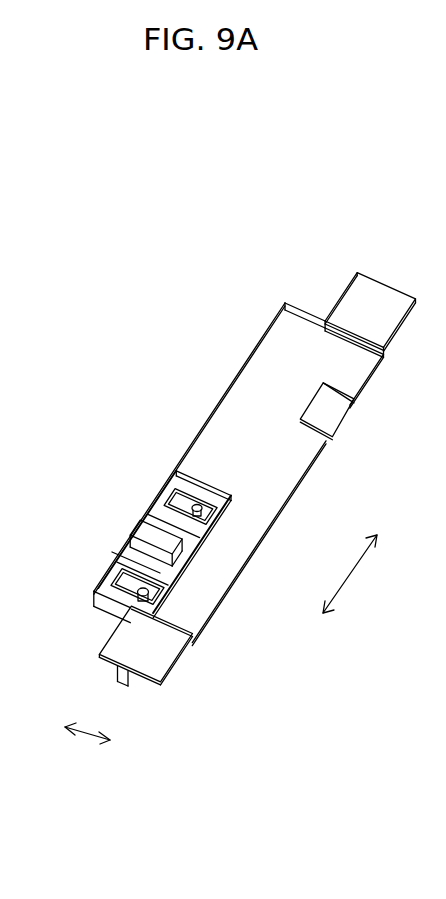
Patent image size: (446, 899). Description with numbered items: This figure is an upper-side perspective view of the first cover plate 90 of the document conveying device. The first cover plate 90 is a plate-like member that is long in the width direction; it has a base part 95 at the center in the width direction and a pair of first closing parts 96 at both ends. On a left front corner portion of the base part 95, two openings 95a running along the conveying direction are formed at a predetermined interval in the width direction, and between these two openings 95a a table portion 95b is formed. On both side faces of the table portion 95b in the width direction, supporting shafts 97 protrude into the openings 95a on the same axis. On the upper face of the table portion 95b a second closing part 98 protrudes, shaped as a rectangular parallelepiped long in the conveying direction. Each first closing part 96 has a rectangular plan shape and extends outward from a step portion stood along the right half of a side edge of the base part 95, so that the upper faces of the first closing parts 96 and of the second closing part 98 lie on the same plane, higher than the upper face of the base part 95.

The first cover plate 90 is at (222, 256).
The base part 95 is at (223, 412).
The opening 95a is at (182, 502).
The table portion 95b is at (147, 562).
The first closing part 96 is at (353, 297).
The supporting shaft 97 is at (208, 517).
The second closing part 98 is at (153, 530).